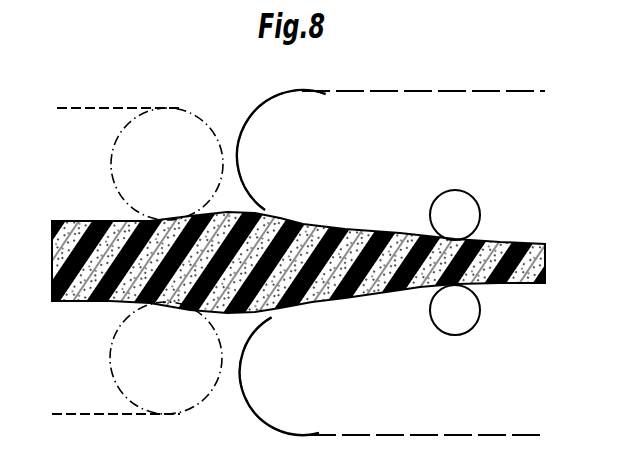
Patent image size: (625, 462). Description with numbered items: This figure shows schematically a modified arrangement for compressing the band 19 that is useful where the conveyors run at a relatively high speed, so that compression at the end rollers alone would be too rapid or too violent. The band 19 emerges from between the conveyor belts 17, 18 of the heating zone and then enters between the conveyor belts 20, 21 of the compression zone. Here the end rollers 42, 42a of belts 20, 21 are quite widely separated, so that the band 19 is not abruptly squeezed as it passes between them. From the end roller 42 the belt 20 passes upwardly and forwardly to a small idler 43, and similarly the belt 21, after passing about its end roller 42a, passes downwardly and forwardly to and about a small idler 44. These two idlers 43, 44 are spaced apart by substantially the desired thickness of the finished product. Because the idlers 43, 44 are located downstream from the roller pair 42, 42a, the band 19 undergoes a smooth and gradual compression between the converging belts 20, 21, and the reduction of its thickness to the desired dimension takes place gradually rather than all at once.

The conveyor belt 17 is at (97, 414).
The conveyor belt 18 is at (98, 108).
The band 19 is at (105, 289).
The conveyor belt 20 is at (427, 435).
The conveyor belt 21 is at (430, 91).
The end roller 42 is at (263, 411).
The end roller 42a is at (336, 106).
The small idler 43 is at (462, 321).
The small idler 44 is at (469, 207).